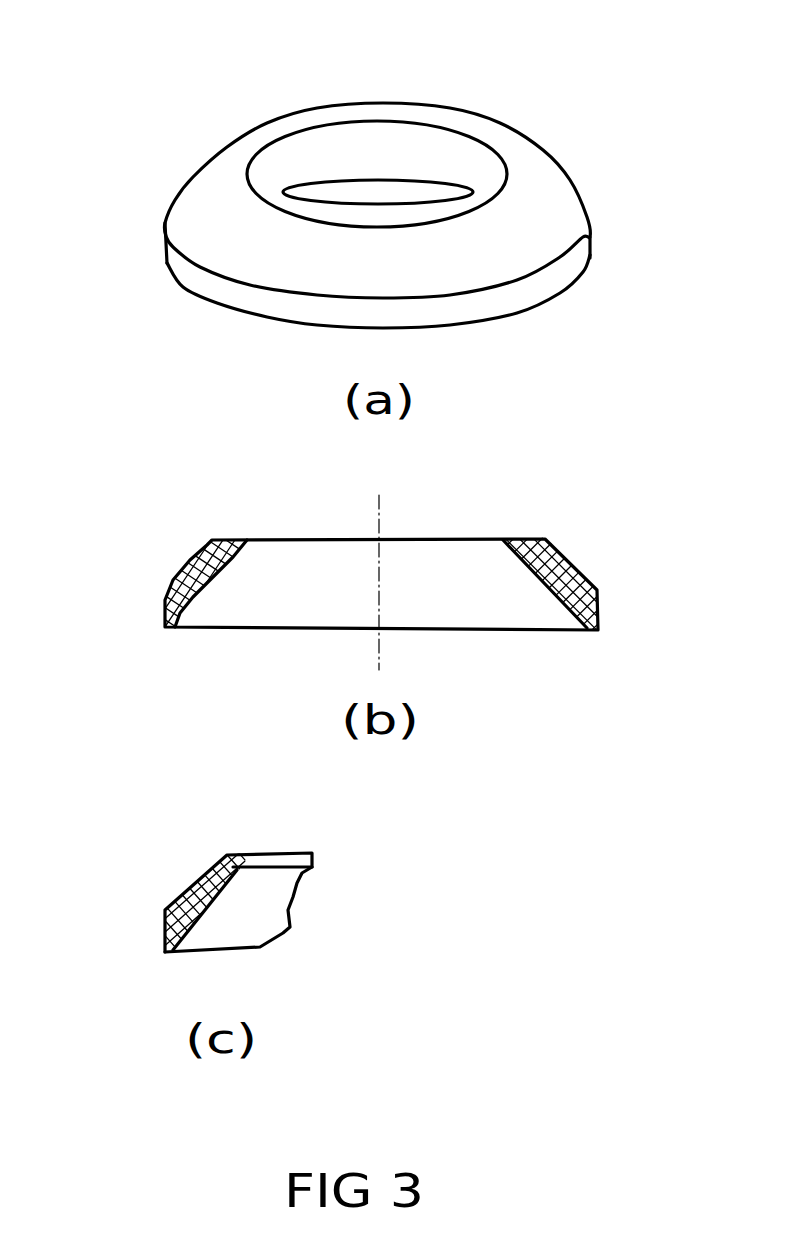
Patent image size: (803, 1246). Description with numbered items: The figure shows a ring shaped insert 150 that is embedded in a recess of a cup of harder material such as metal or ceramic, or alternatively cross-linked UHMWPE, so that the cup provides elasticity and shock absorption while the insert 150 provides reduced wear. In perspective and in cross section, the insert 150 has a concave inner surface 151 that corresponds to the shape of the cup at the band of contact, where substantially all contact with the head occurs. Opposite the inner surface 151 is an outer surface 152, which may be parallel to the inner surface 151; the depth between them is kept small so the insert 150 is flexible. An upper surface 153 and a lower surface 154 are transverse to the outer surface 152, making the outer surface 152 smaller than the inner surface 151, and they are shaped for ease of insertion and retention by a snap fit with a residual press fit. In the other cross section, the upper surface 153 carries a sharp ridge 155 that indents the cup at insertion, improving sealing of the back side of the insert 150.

In FIG. 3a, the insert 150 is at (137, 224).
In FIG. 3a, the inner surface 151 is at (412, 143).
In FIG. 3b, the inner surface 151 is at (239, 577).
In FIG. 3a, the outer surface 152 is at (550, 207).
In FIG. 3b, the outer surface 152 is at (159, 568).
In FIG. 3a, the upper surface 153 is at (240, 152).
In FIG. 3b, the upper surface 153 is at (223, 522).
In FIG. 3c, the upper surface 153 is at (209, 844).
In FIG. 3a, the lower surface 154 is at (572, 263).
In FIG. 3b, the lower surface 154 is at (147, 618).
In FIG. 3c, the sharp ridge 155 is at (238, 841).